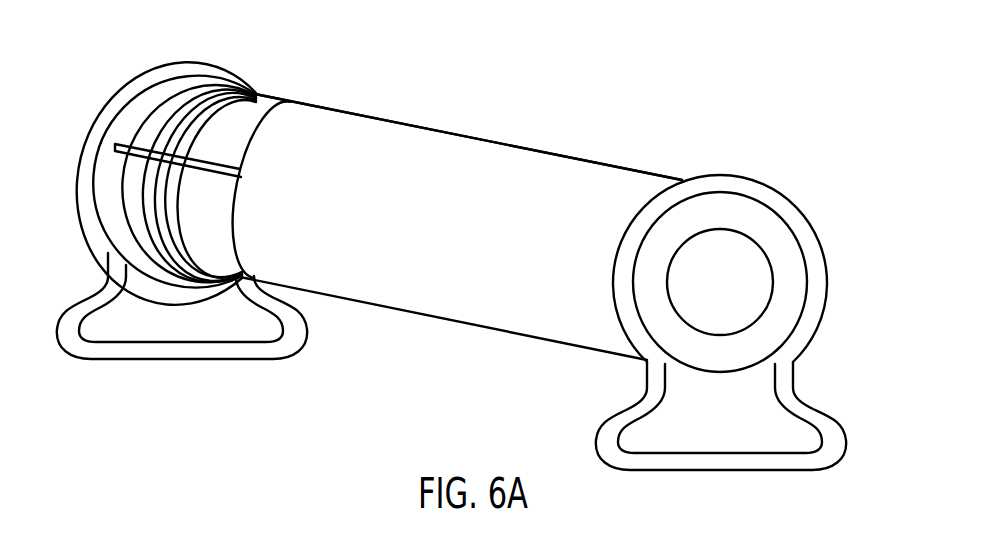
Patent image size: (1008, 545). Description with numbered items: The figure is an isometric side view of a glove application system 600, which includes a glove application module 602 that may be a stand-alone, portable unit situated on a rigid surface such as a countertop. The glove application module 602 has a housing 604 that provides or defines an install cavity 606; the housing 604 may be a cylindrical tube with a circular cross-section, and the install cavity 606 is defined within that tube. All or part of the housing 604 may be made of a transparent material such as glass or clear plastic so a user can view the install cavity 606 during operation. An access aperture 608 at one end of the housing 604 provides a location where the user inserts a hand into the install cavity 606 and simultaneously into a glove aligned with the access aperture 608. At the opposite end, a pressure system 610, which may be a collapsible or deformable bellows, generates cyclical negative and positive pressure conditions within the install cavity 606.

The glove application system 600 is at (461, 242).
The glove application module 602 is at (449, 330).
The housing 604 is at (443, 131).
The install cavity 606 is at (570, 172).
The access aperture 608 is at (750, 279).
The pressure system 610 is at (256, 84).